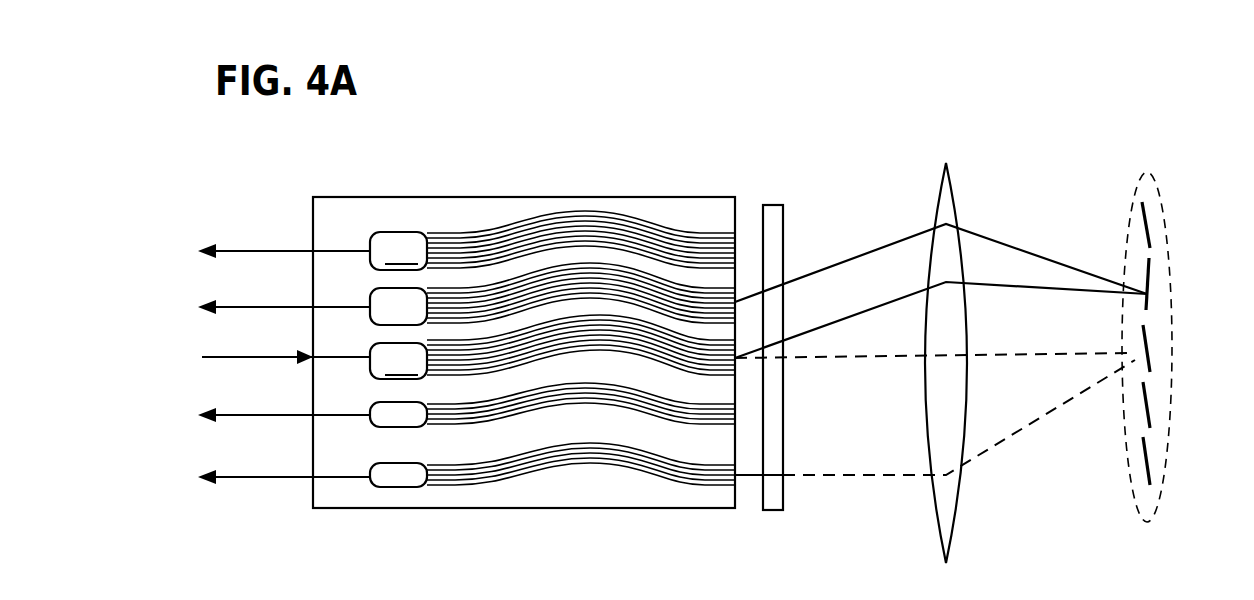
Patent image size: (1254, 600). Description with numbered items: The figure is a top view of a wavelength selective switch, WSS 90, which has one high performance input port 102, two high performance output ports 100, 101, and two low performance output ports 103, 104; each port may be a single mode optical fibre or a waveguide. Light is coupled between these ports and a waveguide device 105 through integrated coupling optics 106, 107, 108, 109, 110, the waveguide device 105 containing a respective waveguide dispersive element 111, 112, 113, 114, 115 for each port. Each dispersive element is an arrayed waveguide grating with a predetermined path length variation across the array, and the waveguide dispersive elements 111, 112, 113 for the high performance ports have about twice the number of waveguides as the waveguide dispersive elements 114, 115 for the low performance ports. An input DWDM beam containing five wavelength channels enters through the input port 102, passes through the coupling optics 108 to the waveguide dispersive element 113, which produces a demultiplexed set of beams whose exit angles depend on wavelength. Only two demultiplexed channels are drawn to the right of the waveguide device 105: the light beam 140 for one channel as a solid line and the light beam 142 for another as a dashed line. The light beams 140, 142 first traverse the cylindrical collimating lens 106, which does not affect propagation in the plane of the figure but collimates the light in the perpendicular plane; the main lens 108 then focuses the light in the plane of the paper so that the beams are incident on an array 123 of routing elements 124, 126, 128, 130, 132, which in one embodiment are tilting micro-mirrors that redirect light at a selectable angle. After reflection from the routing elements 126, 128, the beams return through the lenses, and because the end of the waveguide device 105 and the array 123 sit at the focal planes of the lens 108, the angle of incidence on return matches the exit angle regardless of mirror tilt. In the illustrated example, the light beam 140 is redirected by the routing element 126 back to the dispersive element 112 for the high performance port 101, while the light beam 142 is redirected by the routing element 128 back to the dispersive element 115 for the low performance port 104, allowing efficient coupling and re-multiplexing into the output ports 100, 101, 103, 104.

The WSS 90 is at (740, 110).
The high performance output port 100 is at (286, 248).
The high performance output port 101 is at (286, 304).
The high performance input port 102 is at (286, 354).
The low performance output port 103 is at (287, 418).
The low performance output port 104 is at (287, 480).
The waveguide device 105 is at (478, 197).
The cylindrical collimating lens 106 is at (775, 512).
The integrated coupling optics 107 is at (418, 320).
The main lens 108 is at (952, 563).
The integrated coupling optics 109 is at (413, 415).
The integrated coupling optics 110 is at (387, 478).
The waveguide dispersive element 111 is at (640, 215).
The waveguide dispersive element 112 is at (585, 263).
The waveguide dispersive element 113 is at (538, 323).
The waveguide dispersive element 114 is at (548, 408).
The waveguide dispersive element 115 is at (597, 462).
The array of routing elements 123 is at (1152, 178).
The routing element 124 is at (1148, 222).
The routing element 126 is at (1150, 272).
The routing element 128 is at (1147, 330).
The routing element 130 is at (1147, 408).
The routing element 132 is at (1148, 473).
The light beam 140 is at (890, 298).
The light beam 142 is at (876, 358).